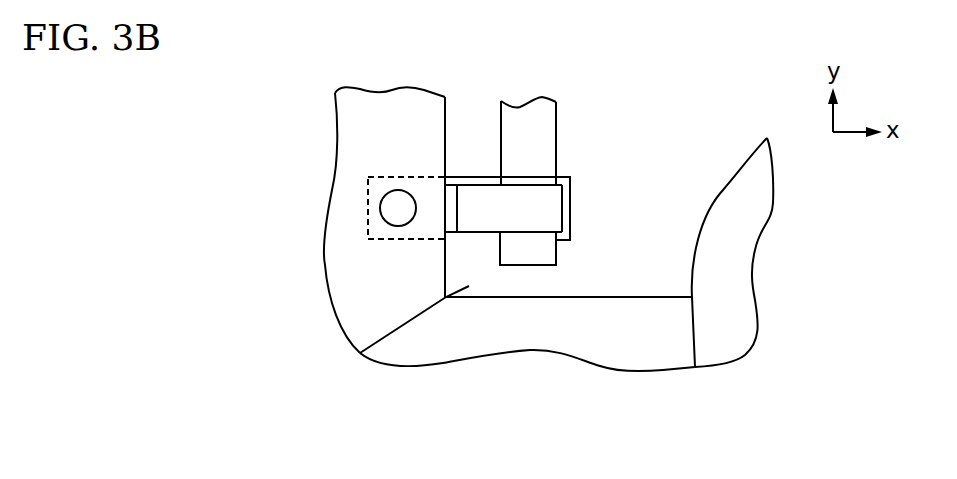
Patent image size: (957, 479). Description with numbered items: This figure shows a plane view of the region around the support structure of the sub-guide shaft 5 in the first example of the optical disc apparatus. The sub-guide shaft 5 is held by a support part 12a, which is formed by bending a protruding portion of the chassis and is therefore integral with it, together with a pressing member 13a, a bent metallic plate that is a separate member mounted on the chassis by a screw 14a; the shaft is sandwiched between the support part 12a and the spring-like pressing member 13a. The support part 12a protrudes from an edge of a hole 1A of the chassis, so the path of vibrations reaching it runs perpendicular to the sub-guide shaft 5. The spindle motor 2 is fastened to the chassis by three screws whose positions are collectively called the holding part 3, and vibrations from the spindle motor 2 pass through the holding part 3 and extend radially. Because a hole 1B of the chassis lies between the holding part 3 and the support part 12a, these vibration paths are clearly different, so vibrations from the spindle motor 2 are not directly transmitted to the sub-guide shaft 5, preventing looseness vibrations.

The hole of the chassis 1A is at (636, 297).
The hole of the chassis 1B is at (360, 353).
The spindle motor 2 is at (733, 283).
The holding part 3 is at (650, 355).
The sub-guide shaft 5 is at (538, 133).
The support part 12a is at (507, 208).
The pressing member 13a is at (573, 200).
The screw 14a is at (392, 215).